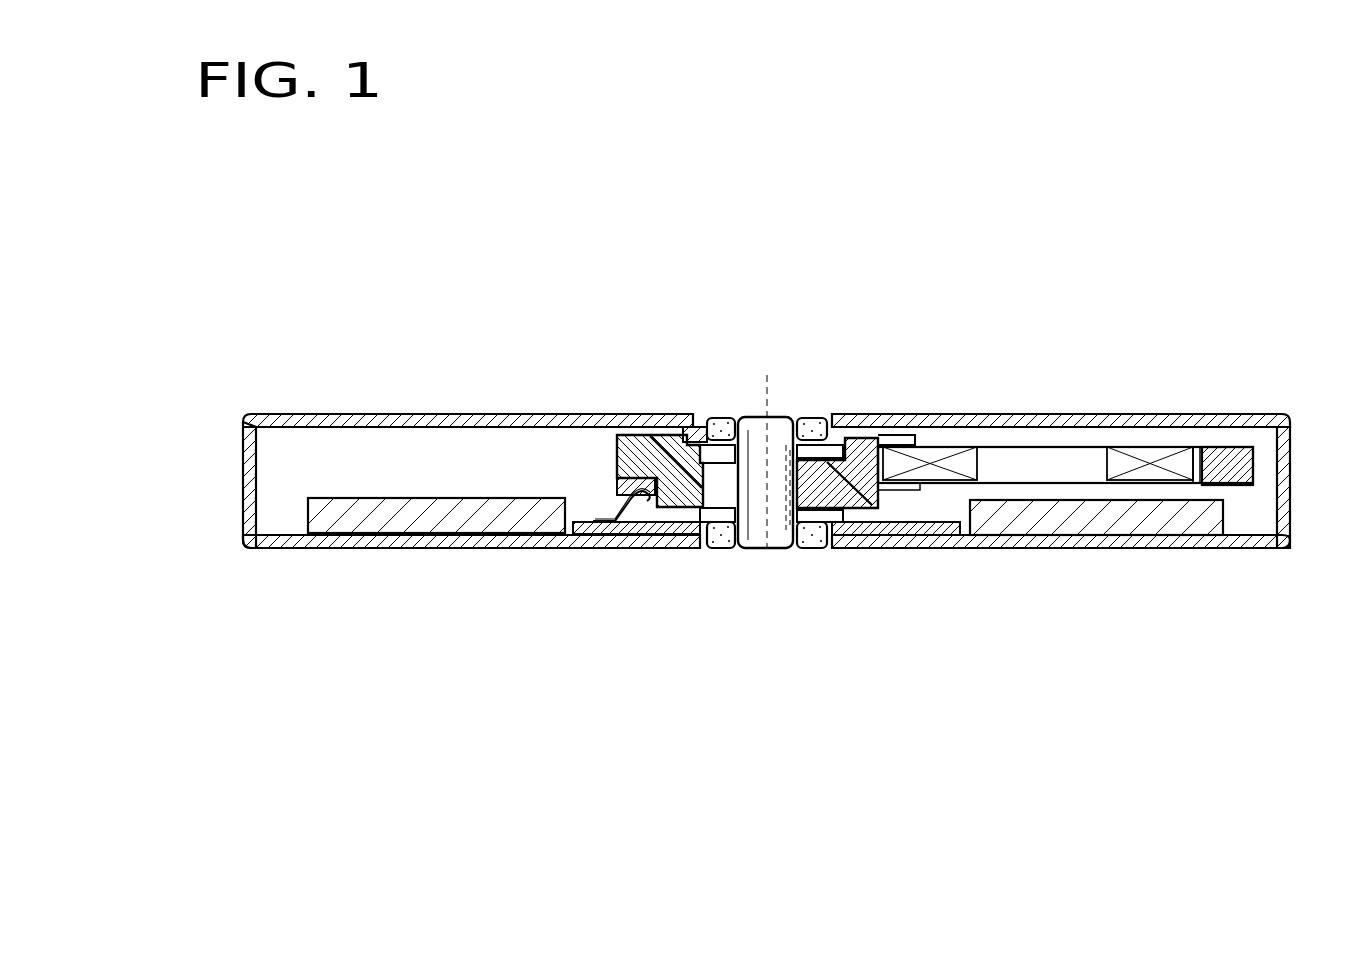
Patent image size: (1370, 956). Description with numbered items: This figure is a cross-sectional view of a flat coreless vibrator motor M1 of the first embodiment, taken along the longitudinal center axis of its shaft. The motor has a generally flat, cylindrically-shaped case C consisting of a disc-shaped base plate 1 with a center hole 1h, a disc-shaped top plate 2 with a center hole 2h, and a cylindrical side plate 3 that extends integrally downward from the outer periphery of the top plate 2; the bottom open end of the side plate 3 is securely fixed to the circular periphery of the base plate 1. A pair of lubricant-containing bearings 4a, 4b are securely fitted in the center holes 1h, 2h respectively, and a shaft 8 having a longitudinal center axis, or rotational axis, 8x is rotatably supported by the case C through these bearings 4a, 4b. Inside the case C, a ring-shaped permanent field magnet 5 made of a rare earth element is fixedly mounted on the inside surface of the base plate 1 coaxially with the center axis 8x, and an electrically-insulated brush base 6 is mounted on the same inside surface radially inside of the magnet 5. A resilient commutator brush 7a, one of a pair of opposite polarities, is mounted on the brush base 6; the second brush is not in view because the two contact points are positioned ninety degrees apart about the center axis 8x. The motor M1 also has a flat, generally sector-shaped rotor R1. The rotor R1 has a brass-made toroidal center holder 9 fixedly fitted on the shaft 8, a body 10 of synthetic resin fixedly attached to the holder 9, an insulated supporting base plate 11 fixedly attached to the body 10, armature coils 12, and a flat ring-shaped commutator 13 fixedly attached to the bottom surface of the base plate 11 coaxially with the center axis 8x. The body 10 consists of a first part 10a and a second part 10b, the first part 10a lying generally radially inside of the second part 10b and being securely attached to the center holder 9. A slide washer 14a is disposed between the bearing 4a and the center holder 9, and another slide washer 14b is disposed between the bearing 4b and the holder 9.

The base plate 1 is at (412, 540).
The center hole 1h is at (713, 548).
The top plate 2 is at (291, 414).
The center hole 2h is at (710, 414).
The side plate 3 is at (243, 485).
The bearing 4a is at (721, 535).
The bearing 4b is at (816, 418).
The permanent field magnet 5 is at (500, 515).
The brush base 6 is at (950, 530).
The commutator brush 7a is at (640, 502).
The shaft 8 is at (752, 440).
The center axis 8x is at (767, 400).
The center holder 9 is at (757, 490).
The body 10 is at (612, 462).
The first part 10a is at (648, 457).
The second part 10b is at (1253, 462).
The supporting base plate 11 is at (1085, 470).
The armature coils 12 is at (980, 455).
The commutator 13 is at (900, 490).
The slide washer 14a is at (825, 522).
The slide washer 14b is at (830, 448).
The vibrator motor M1 is at (390, 370).
The rotor R1 is at (1055, 447).
The case C is at (497, 414).